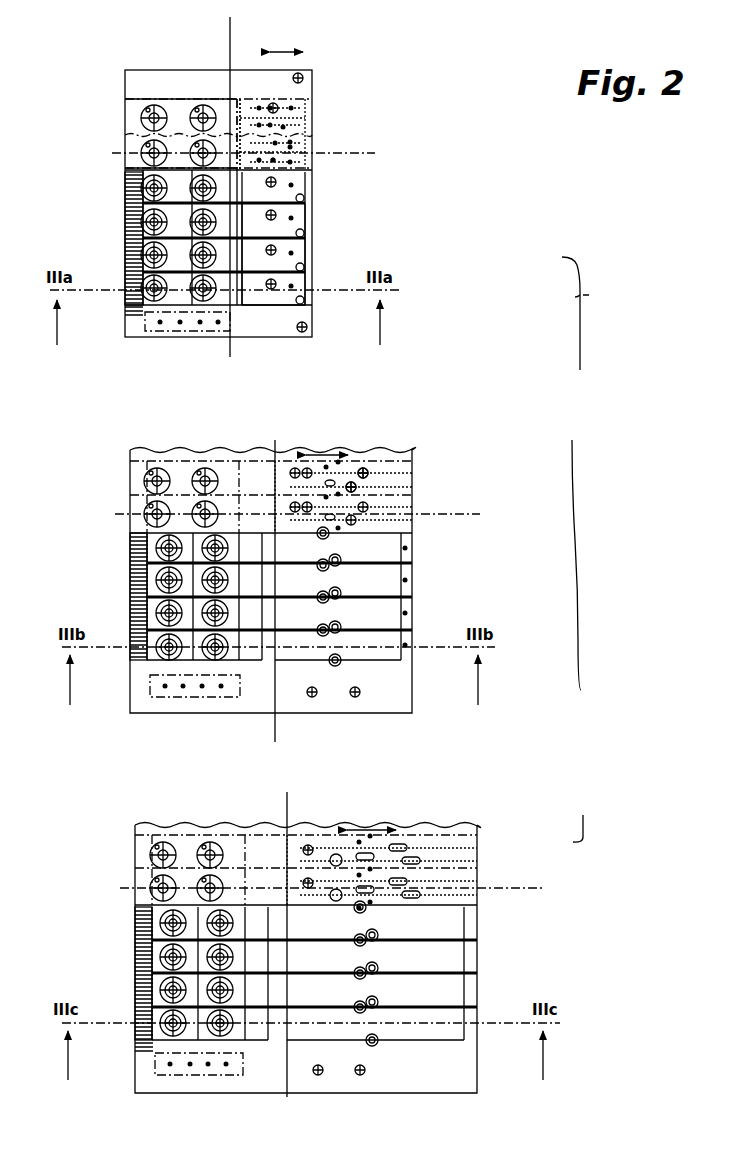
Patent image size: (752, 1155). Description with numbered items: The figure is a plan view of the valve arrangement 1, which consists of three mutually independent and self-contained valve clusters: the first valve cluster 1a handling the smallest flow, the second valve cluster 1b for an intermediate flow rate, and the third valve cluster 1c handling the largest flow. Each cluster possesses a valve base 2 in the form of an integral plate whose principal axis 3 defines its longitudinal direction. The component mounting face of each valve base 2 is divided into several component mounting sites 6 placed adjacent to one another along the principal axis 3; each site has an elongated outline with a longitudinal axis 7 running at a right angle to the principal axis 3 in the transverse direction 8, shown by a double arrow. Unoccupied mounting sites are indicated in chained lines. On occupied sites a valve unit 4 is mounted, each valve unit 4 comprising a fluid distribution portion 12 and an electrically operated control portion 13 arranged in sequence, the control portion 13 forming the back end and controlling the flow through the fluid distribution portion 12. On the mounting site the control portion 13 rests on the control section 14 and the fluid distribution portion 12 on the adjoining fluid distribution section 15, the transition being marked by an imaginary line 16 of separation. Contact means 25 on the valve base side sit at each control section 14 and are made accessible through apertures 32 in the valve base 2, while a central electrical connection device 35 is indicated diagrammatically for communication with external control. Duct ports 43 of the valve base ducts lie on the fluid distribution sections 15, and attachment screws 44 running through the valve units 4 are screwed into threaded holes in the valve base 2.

The valve arrangement 1 is at (608, 298).
The first valve cluster 1a is at (375, 100).
The second valve cluster 1b is at (493, 487).
The third valve cluster 1c is at (545, 823).
The valve base 2 is at (290, 75).
The principal axis 3 is at (230, 20).
The valve unit 4 is at (310, 278).
The component mounting site 6 is at (302, 100).
The longitudinal axis 7 is at (375, 153).
The transverse direction 8 is at (292, 50).
The fluid distribution portion 12 is at (258, 262).
The control portion 13 is at (140, 222).
The control section 14 is at (178, 100).
The fluid distribution section 15 is at (255, 95).
The imaginary line of separation 16 is at (238, 103).
The contact means on the valve base side 25 is at (150, 153).
The aperture 32 is at (202, 105).
The central electrical connection device 35 is at (175, 331).
The duct port 43 is at (273, 160).
The attachment screw 44 is at (305, 298).